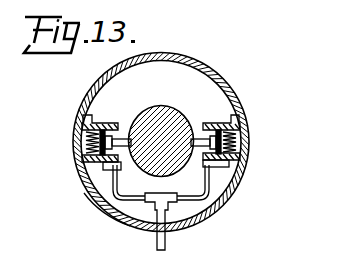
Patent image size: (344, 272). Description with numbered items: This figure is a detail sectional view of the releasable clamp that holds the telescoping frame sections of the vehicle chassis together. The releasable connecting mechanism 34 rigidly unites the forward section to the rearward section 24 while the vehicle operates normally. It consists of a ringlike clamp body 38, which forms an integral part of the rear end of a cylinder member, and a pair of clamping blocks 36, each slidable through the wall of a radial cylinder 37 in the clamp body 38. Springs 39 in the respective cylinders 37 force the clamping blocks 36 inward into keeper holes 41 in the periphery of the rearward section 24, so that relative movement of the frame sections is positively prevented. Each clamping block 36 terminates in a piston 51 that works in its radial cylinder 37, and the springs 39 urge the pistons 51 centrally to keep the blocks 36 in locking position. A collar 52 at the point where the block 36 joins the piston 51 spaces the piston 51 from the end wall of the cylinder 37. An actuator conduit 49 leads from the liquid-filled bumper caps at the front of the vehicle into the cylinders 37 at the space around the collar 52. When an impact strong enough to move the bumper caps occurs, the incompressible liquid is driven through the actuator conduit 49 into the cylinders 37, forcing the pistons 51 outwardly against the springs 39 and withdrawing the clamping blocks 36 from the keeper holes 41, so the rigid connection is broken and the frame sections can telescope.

The releasable connecting mechanism 34 is at (254, 77).
The rearward section 24 is at (163, 105).
The clamping block 36 is at (127, 137).
The radial cylinder 37 is at (102, 124).
The piston 51 is at (212, 126).
The spring 39 is at (80, 149).
The collar 52 is at (103, 168).
The keeper hole 41 is at (119, 168).
The clamp body 38 is at (84, 193).
The actuator conduit 49 is at (168, 246).